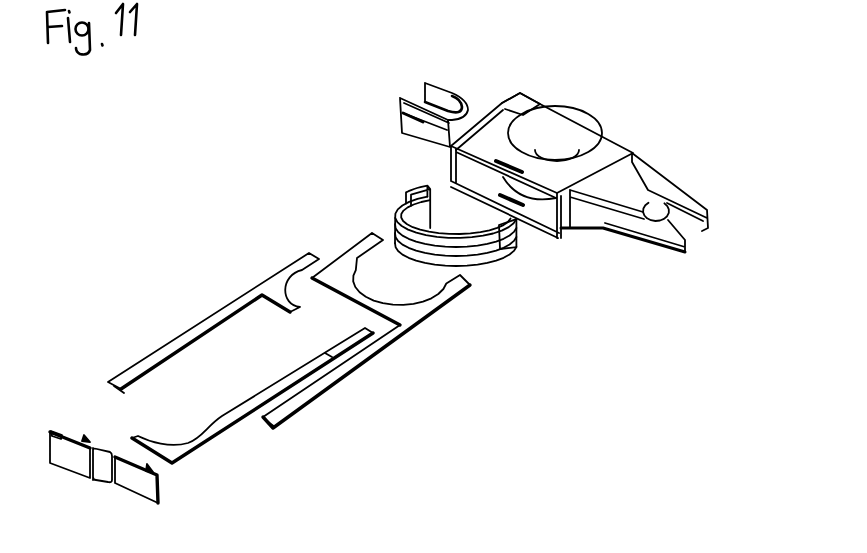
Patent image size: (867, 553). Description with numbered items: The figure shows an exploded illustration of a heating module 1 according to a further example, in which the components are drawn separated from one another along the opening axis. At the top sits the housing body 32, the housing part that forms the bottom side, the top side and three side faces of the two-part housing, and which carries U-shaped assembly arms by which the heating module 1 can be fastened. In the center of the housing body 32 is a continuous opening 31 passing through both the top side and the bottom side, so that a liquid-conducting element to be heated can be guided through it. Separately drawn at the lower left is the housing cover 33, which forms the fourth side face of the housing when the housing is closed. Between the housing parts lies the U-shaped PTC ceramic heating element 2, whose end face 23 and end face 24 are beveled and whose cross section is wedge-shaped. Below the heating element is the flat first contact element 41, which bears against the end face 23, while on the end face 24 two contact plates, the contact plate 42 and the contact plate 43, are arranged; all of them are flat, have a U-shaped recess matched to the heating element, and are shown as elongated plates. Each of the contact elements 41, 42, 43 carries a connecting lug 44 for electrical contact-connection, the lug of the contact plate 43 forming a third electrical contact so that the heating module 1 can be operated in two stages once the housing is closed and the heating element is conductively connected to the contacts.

The heating module 1 is at (265, 125).
The PTC ceramic heating element 2 is at (527, 259).
The end face 23 is at (406, 203).
The end face 24 is at (487, 263).
The opening 31 is at (557, 153).
The housing body 32 is at (505, 118).
The housing cover 33 is at (133, 490).
The first contact element 41 is at (422, 318).
The contact plate 42 is at (270, 288).
The contact plate 43 is at (187, 446).
The connecting lug 44 is at (126, 375).